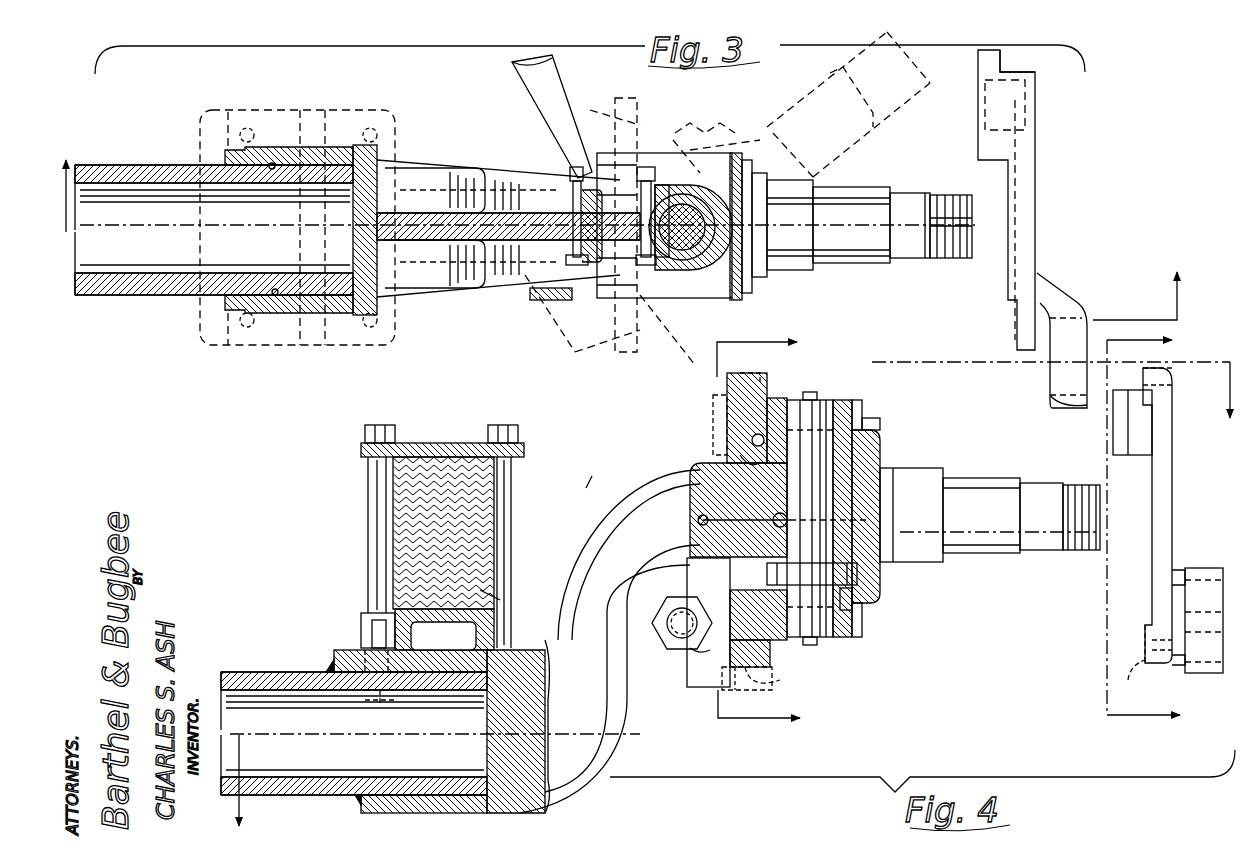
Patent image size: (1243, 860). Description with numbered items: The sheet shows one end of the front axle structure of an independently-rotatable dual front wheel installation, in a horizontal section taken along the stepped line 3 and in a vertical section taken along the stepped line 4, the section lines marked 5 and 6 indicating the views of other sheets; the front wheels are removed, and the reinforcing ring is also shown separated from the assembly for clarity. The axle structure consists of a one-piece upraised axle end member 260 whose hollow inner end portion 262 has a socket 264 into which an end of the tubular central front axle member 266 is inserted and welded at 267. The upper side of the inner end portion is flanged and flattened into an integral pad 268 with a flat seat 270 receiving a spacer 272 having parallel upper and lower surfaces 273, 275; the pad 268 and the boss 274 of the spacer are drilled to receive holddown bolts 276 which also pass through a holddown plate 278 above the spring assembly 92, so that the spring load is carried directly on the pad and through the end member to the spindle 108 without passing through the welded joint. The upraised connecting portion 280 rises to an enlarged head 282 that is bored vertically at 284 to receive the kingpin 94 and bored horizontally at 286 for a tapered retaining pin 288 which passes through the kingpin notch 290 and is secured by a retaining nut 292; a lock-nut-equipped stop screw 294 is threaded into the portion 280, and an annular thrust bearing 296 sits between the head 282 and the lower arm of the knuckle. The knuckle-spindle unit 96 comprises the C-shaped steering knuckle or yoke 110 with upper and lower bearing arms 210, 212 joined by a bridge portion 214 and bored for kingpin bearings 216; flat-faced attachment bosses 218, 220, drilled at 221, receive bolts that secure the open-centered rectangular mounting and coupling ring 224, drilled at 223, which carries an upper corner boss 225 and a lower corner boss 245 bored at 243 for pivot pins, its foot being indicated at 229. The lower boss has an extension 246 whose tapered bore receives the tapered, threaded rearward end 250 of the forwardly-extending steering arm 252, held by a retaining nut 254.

In FIG. 4, the stepped section line 3— 3 is at (719, 596).
In FIG. 3, the stepped section line 4— 4 is at (620, 223).
In FIG. 3, the section line 5- 5 is at (1152, 341).
In FIG. 4, the section line 5- 5 is at (1157, 534).
In FIG. 4, the section line 6- 6 is at (771, 531).
In FIG. 4, the spring assembly 92 is at (395, 495).
In FIG. 4, the kingpin 94 is at (800, 650).
In FIG. 3, the knuckle-spindle unit 96 is at (745, 150).
In FIG. 4, the knuckle-spindle unit 96 is at (872, 418).
In FIG. 3, the spindle 108 is at (880, 188).
In FIG. 4, the spindle 108 is at (975, 490).
In FIG. 4, the steering knuckle or yoke 110 is at (855, 597).
In FIG. 4, the upper bearing arm 210 is at (858, 425).
In FIG. 4, the lower bearing arm 212 is at (800, 618).
In FIG. 3, the bridge portion 214 is at (735, 300).
In FIG. 4, the bridge portion 214 is at (858, 445).
In FIG. 4, the kingpin bearing 216 is at (826, 400).
In FIG. 4, the upper attachment boss 218 is at (728, 382).
In FIG. 3, the lower attachment boss 220 is at (662, 186).
In FIG. 4, the lower attachment boss 220 is at (740, 668).
In FIG. 4, the bolt hole 221 is at (715, 420).
In FIG. 4, the bolt hole 223 is at (745, 374).
In FIG. 3, the combined mounting and coupling ring 224 is at (1040, 213).
In FIG. 4, the combined mounting and coupling ring 224 is at (773, 380).
In FIG. 3, the upper corner boss 225 is at (998, 66).
In FIG. 4, the upper corner boss 225 is at (1128, 440).
In FIG. 4, the bracket foot 229 is at (1130, 675).
In FIG. 3, the bore 243 is at (1080, 310).
In FIG. 4, the bore 243 is at (1212, 580).
In FIG. 3, the lower corner boss 245 is at (1050, 404).
In FIG. 4, the lower corner boss 245 is at (1180, 572).
In FIG. 4, the extension 246 is at (692, 650).
In FIG. 4, the rearward end of steering arm 250 is at (668, 620).
In FIG. 3, the steering arm 252 is at (522, 90).
In FIG. 3, the retaining nut 254 is at (560, 302).
In FIG. 4, the retaining nut 254 is at (703, 655).
In FIG. 3, the axle end member 260 is at (448, 182).
In FIG. 4, the axle end member 260 is at (577, 468).
In FIG. 3, the inner end portion 262 is at (340, 316).
In FIG. 4, the inner end portion 262 is at (368, 812).
In FIG. 3, the socket 264 is at (272, 162).
In FIG. 4, the socket 264 is at (418, 778).
In FIG. 3, the tubular central front axle member 266 is at (172, 296).
In FIG. 4, the tubular central front axle member 266 is at (248, 672).
In FIG. 4, the weld 267 is at (333, 668).
In FIG. 3, the pad 268 is at (388, 112).
In FIG. 4, the pad 268 is at (338, 650).
In FIG. 4, the flat seat 270 is at (396, 618).
In FIG. 4, the spacer 272 is at (368, 614).
In FIG. 4, the upper surface of spacer 273 is at (490, 597).
In FIG. 4, the boss of spacer 274 is at (378, 622).
In FIG. 4, the lower surface of spacer 275 is at (443, 636).
In FIG. 4, the holddown bolt 276 is at (365, 432).
In FIG. 4, the holddown plate 278 is at (410, 443).
In FIG. 4, the upraised central or connecting portion 280 is at (593, 474).
In FIG. 4, the enlarged head 282 is at (890, 472).
In FIG. 4, the vertical bore 284 is at (752, 440).
In FIG. 3, the horizontal tapered bore 286 is at (664, 258).
In FIG. 4, the horizontal tapered bore 286 is at (745, 461).
In FIG. 4, the tapered retaining pin 288 is at (720, 520).
In FIG. 4, the kingpin notch 290 is at (872, 520).
In FIG. 3, the retaining nut 292 is at (648, 166).
In FIG. 3, the stop screw 294 is at (580, 166).
In FIG. 4, the stop screw 294 is at (700, 518).
In FIG. 4, the annular anti-friction thrust bearing 296 is at (860, 575).